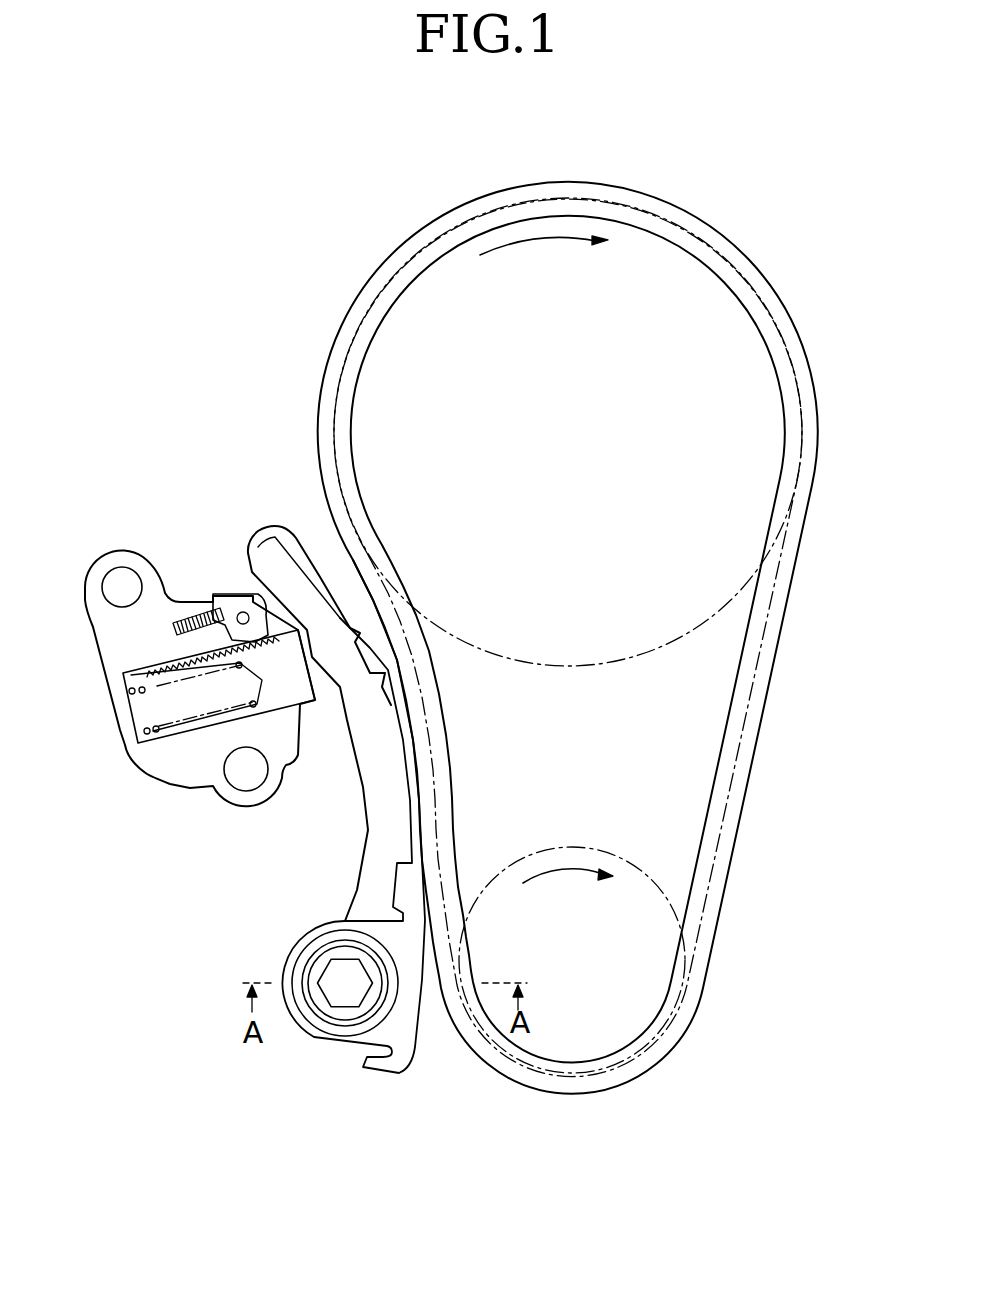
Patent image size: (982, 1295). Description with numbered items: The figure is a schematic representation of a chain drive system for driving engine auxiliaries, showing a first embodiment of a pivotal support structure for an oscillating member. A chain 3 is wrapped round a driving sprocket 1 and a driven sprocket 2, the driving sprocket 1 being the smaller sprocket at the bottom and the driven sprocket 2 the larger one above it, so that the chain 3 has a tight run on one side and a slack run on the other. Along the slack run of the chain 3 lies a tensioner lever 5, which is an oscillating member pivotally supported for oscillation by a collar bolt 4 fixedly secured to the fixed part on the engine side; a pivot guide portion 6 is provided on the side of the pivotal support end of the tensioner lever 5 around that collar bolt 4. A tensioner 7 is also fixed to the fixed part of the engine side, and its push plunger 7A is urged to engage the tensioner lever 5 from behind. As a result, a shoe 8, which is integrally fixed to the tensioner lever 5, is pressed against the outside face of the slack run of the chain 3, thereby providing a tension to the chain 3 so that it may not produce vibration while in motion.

The driving sprocket 1 is at (653, 957).
The driven sprocket 2 is at (675, 262).
The chain 3 is at (725, 836).
The collar bolt 4 is at (340, 995).
The tensioner lever 5 is at (377, 783).
The pivot guide portion 6 is at (297, 937).
The tensioner 7 is at (152, 770).
The push plunger 7A is at (220, 593).
The shoe 8 is at (310, 547).